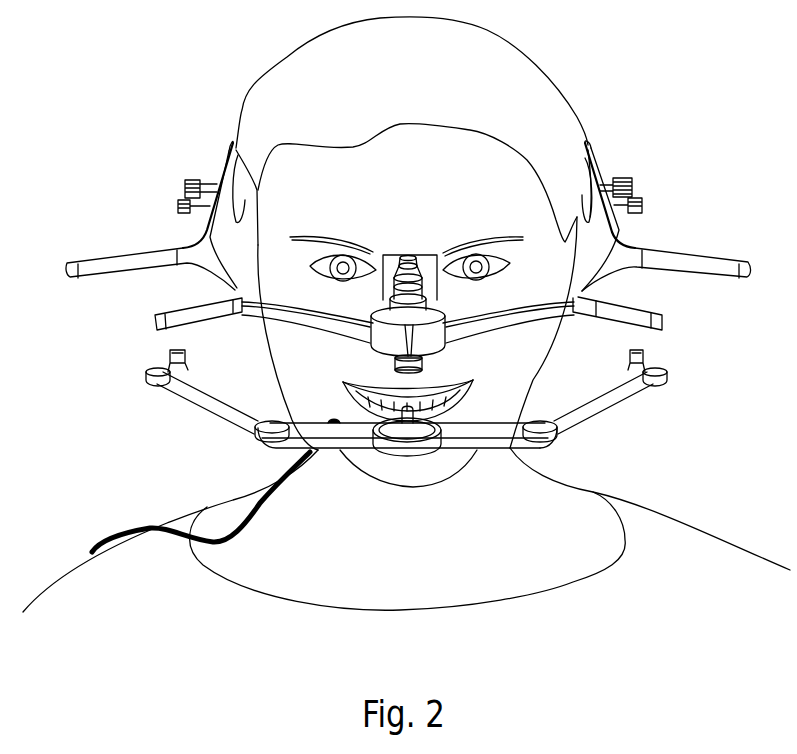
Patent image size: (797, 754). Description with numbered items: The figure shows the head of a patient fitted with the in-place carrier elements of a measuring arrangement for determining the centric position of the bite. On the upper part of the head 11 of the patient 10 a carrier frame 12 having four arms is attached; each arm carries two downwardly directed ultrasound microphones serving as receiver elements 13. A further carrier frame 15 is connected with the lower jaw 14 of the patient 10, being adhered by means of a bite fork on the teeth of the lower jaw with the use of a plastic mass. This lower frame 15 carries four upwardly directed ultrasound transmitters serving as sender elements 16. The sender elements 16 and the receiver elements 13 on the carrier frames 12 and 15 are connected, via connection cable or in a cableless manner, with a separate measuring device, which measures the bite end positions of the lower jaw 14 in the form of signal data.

The patient 10 is at (680, 506).
The head 11 is at (558, 118).
The carrier frame 12 is at (612, 278).
The receiver elements 13 is at (68, 280).
The lower jaw 14 is at (388, 470).
The carrier frame 15 is at (610, 412).
The sender elements 16 is at (188, 365).